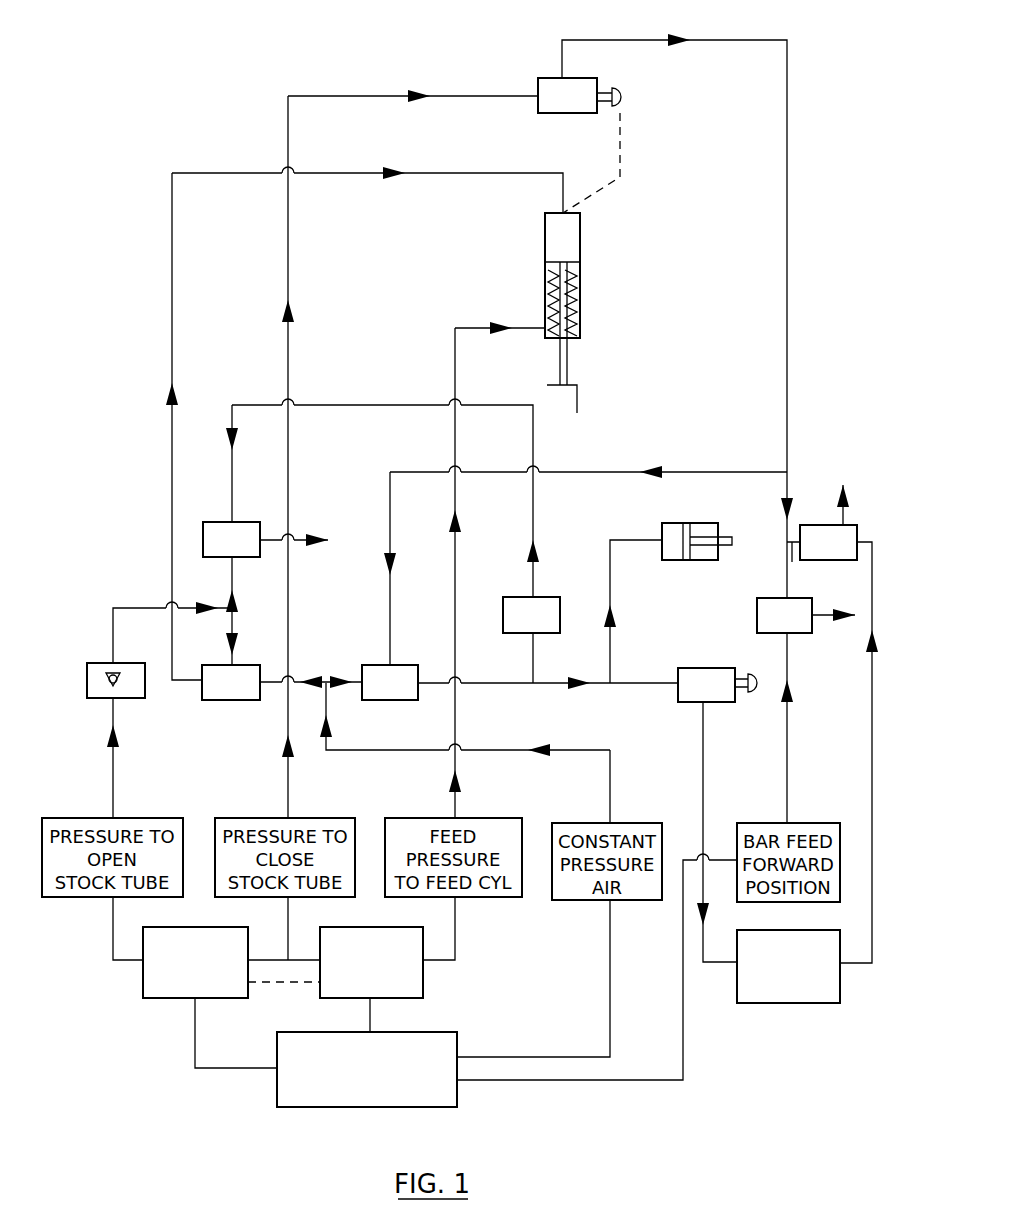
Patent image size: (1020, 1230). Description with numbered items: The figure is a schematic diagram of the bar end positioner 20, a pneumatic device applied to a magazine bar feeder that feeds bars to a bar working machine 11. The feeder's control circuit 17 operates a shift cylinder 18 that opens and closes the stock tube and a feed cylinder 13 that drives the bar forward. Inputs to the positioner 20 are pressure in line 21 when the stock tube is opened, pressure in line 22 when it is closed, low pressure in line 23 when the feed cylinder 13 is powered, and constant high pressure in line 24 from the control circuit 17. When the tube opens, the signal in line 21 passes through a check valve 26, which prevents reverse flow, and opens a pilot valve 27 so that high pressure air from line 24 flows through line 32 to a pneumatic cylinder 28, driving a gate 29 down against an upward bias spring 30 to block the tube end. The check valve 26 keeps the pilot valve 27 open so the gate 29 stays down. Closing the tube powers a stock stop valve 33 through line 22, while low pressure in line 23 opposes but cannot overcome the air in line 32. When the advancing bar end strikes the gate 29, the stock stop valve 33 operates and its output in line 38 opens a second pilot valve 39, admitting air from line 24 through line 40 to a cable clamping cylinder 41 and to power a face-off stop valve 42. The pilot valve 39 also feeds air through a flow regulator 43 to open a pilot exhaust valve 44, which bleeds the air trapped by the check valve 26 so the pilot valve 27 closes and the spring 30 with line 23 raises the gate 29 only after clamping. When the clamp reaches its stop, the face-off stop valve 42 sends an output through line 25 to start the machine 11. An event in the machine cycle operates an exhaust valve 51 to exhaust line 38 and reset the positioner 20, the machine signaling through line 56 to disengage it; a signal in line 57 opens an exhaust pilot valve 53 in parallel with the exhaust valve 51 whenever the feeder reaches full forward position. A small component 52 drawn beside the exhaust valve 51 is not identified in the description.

The bar working machine 11 is at (735, 977).
The feed cylinder 13 is at (425, 993).
The control circuit 17 is at (285, 1105).
The shift cylinder 18 is at (165, 1000).
The bar end positioner 20 is at (318, 58).
The line 21 is at (113, 767).
The line 22 is at (288, 285).
The line 23 is at (452, 348).
The line 24 is at (610, 790).
The line 25 is at (703, 790).
The check valve 26 is at (108, 663).
The pilot valve 27 is at (222, 702).
The pneumatic cylinder 28 is at (545, 243).
The gate 29 is at (577, 405).
The bias spring 30 is at (552, 317).
The line 32 is at (172, 295).
The stock stop valve 33 is at (548, 77).
The line 38 is at (787, 117).
The pilot valve 39 is at (380, 665).
The line 40 is at (565, 687).
The cable clamping cylinder 41 is at (662, 523).
The face-off stop valve 42 is at (700, 668).
The flow regulator 43 is at (522, 597).
The pilot exhaust valve 44 is at (222, 522).
The exhaust valve 51 is at (833, 525).
The exhaust port 52 is at (804, 568).
The exhaust pilot valve 53 is at (765, 598).
The line 56 is at (872, 700).
The line 57 is at (787, 782).